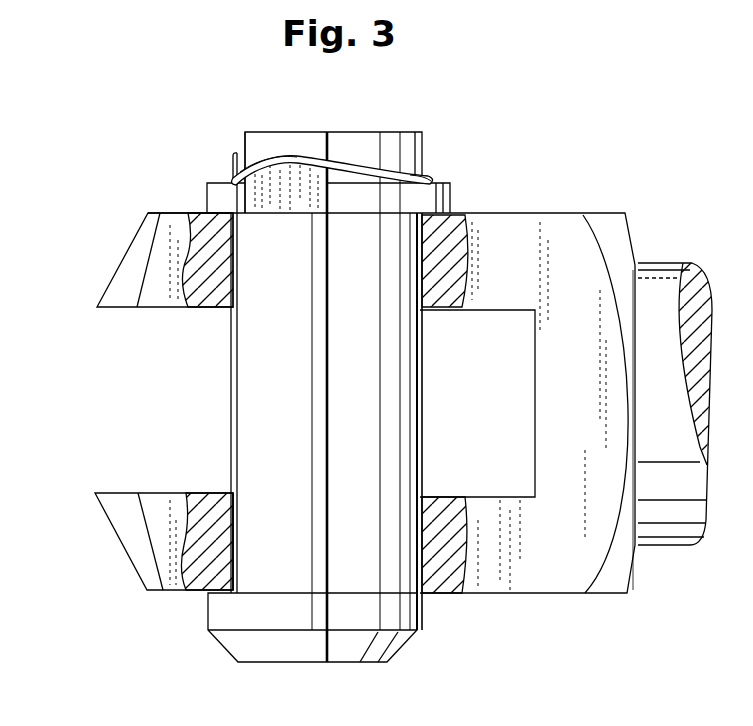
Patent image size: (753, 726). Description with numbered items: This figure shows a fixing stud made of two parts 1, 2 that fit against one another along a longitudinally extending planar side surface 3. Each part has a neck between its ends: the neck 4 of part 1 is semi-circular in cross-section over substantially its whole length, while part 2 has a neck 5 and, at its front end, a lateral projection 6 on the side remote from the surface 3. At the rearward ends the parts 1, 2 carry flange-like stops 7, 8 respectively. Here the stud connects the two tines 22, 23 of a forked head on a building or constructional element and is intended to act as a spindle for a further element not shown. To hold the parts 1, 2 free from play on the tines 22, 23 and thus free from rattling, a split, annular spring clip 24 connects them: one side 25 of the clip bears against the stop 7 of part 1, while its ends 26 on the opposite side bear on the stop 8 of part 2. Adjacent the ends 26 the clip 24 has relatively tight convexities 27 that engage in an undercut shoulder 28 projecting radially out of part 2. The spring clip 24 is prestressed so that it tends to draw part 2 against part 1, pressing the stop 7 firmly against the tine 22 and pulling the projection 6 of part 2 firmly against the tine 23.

The stud part 1 is at (420, 604).
The stud part 2 is at (258, 520).
The planar side surface 3 is at (327, 412).
The neck 4 is at (360, 400).
The neck 5 is at (270, 375).
The lateral projection 6 is at (215, 612).
The stop 7 is at (432, 200).
The stop 8 is at (220, 197).
The tine 22 is at (137, 258).
The tine 23 is at (127, 516).
The split spring clip 24 is at (353, 172).
The side of spring clip 25 is at (430, 173).
The ends of spring clip 26 is at (233, 160).
The convexities 27 is at (287, 160).
The undercut shoulder 28 is at (305, 140).